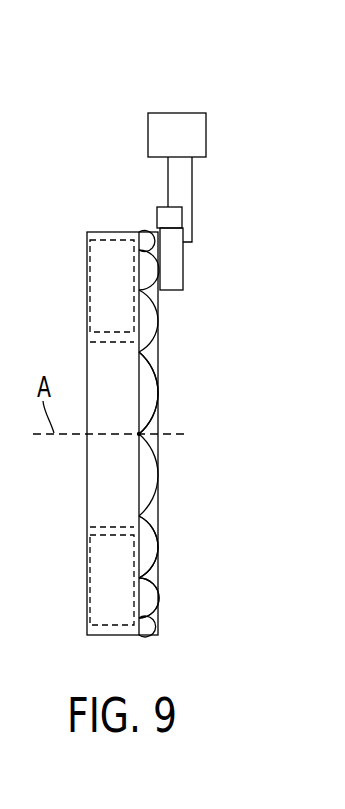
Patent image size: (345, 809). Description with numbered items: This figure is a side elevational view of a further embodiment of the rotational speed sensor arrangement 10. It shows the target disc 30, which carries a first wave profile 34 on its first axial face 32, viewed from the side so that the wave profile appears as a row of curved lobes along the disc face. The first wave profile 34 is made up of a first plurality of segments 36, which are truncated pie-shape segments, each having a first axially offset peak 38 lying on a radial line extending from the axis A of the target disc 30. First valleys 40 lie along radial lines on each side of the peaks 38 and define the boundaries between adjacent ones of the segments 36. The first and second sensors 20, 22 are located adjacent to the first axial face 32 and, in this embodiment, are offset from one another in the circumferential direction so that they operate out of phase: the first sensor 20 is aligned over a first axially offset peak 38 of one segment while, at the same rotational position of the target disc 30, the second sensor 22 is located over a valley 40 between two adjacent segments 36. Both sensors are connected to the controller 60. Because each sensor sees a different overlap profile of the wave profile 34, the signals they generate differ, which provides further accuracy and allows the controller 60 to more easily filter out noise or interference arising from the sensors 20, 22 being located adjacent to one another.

The rotational speed sensor arrangement 10 is at (214, 131).
The controller 60 is at (160, 137).
The first sensor 20 is at (164, 213).
The second sensor 22 is at (172, 270).
The target disc 30 is at (87, 294).
The first axial face 32 is at (158, 472).
The first wave profile 34 is at (152, 578).
The first plurality of segments 36 is at (141, 513).
The first axially offset peak 38 is at (158, 390).
The first valley 40 is at (140, 434).